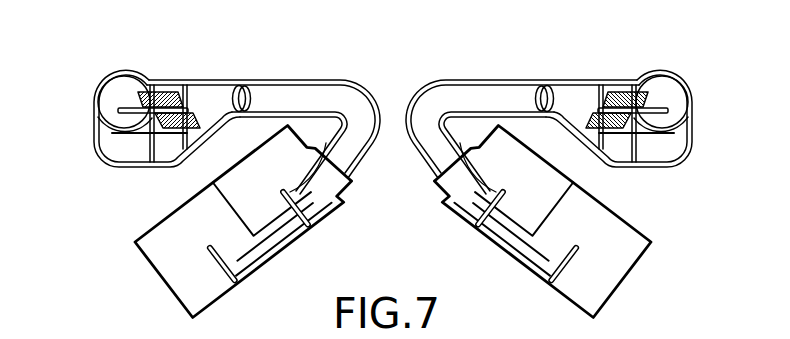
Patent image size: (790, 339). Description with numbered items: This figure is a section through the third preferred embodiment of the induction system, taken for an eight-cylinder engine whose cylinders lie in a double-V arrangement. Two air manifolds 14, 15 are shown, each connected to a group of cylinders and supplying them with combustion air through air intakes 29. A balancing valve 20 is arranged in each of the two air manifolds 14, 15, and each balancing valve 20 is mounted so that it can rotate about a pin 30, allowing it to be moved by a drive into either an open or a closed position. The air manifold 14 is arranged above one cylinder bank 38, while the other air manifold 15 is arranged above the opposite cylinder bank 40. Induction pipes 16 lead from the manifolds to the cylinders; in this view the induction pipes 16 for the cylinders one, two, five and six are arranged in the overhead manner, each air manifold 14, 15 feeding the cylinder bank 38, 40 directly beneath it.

The air manifold 14 is at (118, 84).
The air manifold 15 is at (670, 80).
The induction pipes 16 is at (424, 92).
The balancing valve 20 is at (617, 88).
The air intakes 29 is at (556, 287).
The pin 30 is at (678, 135).
The cylinder bank 38 is at (178, 286).
The cylinder bank 40 is at (608, 282).